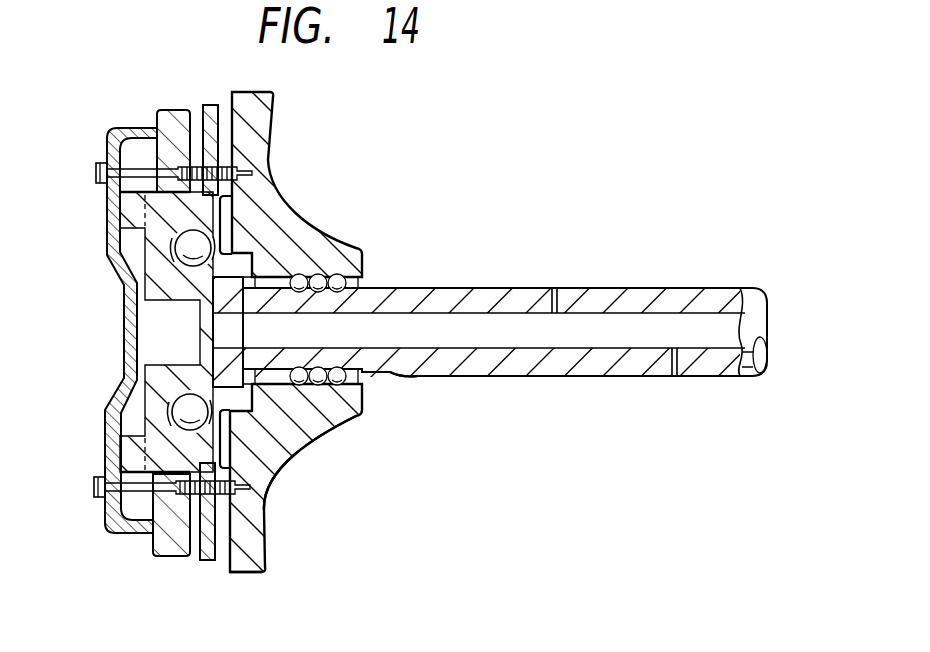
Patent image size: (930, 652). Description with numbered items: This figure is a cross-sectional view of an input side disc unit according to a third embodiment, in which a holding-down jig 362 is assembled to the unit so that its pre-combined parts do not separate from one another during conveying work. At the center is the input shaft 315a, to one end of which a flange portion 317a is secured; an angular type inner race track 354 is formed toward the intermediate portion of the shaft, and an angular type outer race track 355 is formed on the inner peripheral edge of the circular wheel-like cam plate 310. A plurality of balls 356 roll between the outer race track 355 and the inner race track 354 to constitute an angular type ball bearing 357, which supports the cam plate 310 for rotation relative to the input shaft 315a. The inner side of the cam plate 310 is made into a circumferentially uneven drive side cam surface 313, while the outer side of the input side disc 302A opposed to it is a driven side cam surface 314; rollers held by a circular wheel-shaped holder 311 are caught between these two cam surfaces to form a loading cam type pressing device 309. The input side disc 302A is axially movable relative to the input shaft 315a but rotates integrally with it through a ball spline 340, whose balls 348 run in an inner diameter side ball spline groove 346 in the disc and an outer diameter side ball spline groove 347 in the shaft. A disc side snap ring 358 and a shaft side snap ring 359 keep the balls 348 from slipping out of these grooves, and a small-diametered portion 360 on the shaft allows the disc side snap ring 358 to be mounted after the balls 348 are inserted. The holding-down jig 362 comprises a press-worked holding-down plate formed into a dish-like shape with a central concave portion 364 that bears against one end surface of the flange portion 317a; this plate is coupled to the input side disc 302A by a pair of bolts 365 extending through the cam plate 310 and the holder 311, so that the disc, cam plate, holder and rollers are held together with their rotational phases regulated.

The input side disc 302A is at (268, 525).
The pressing device 309 is at (160, 554).
The cam plate 310 is at (157, 104).
The holder 311 is at (208, 561).
The drive side cam surface 313 is at (195, 102).
The driven side cam surface 314 is at (243, 572).
The input shaft 315a is at (593, 290).
The flange portion 317a is at (150, 418).
The ball spline 340 is at (324, 386).
The inner diameter side ball spline groove 346 is at (295, 272).
The outer diameter side ball spline groove 347 is at (258, 514).
The balls 348 is at (309, 368).
The inner race track 354 is at (112, 254).
The outer race track 355 is at (247, 198).
The balls 356 is at (176, 399).
The angular type ball bearing 357 is at (236, 197).
The disc side snap ring 358 is at (376, 283).
The shaft side snap ring 359 is at (279, 432).
The small-diametered portion 360 is at (403, 377).
The holding-down jig 362 is at (110, 221).
The concave portion 364 is at (127, 333).
The bolts 365 is at (104, 160).